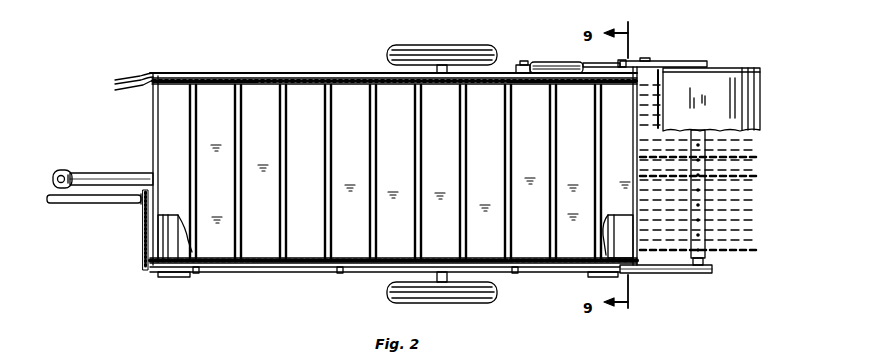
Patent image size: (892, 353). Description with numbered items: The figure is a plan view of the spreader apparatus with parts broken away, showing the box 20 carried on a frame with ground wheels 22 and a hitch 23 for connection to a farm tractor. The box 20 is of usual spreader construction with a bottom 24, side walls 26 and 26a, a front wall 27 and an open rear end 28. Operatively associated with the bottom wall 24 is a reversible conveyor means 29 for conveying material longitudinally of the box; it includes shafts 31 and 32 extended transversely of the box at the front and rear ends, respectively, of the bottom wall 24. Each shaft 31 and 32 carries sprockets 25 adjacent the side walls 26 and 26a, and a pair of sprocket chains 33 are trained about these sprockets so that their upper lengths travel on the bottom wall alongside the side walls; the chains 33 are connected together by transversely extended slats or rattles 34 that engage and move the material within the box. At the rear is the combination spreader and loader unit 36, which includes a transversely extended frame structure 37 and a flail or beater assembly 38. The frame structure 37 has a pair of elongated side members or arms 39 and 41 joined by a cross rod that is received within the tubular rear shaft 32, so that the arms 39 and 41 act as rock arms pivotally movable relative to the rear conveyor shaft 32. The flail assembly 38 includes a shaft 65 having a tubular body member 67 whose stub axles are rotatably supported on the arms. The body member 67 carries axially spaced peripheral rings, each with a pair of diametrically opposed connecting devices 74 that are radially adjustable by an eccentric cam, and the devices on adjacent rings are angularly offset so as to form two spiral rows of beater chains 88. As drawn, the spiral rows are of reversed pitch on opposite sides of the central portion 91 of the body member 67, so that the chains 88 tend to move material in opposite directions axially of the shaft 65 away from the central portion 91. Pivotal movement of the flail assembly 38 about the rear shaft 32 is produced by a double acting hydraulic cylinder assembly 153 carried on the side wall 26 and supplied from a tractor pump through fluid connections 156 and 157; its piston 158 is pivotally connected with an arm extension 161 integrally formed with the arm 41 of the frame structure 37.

The box 20 is at (385, 180).
The ground wheels 22 is at (470, 50).
The hitch 23 is at (70, 172).
The bottom wall 24 is at (352, 245).
The sprockets 25 is at (172, 273).
The side wall 26 is at (297, 78).
The side wall 26a is at (276, 268).
The front wall 27 is at (153, 135).
The open rear end 28 is at (635, 92).
The reversible conveyor means 29 is at (244, 250).
The front shaft 31 is at (165, 240).
The rear shaft 32 is at (636, 258).
The sprocket chains 33 is at (210, 78).
The slats or rattles 34 is at (372, 170).
The combination spreader and loader unit 36 is at (724, 60).
The frame structure 37 is at (708, 278).
The flail assembly 38 is at (722, 180).
The side member 39 is at (676, 273).
The side member 41 is at (675, 62).
The shaft 65 is at (716, 257).
The tubular body member 67 is at (700, 238).
The connecting devices 74 is at (700, 155).
The beater chains 88 is at (745, 250).
The central portion 91 is at (715, 175).
The double acting hydraulic cylinder assembly 153 is at (550, 62).
The fluid connection 156 is at (125, 95).
The fluid connection 157 is at (131, 78).
The piston 158 is at (609, 63).
The arm extension 161 is at (628, 66).